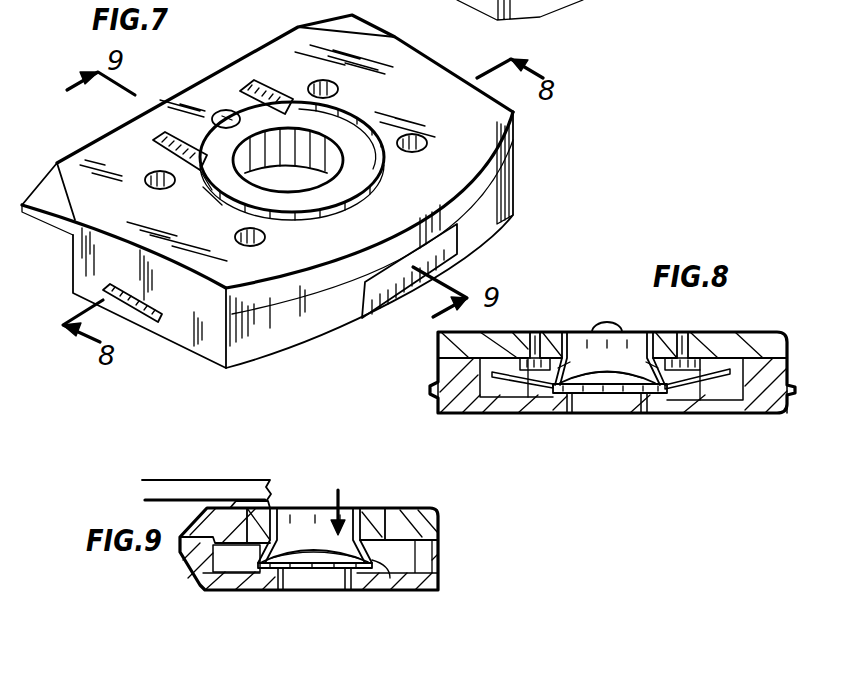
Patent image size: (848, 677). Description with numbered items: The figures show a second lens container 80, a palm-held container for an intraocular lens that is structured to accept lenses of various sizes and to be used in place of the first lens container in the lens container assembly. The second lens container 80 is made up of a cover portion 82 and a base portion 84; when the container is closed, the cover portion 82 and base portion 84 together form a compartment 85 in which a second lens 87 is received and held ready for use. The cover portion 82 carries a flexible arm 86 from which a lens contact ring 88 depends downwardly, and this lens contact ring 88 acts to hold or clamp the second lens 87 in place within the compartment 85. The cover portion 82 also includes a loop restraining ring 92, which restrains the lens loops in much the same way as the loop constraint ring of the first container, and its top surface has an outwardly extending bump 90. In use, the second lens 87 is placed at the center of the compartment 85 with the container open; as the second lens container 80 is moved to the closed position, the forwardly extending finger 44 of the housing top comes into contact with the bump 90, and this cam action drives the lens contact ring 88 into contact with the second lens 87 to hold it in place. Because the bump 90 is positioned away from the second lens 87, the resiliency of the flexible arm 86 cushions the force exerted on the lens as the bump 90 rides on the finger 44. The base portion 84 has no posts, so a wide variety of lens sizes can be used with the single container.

In FIG. 9, the finger 44 is at (178, 485).
In FIG. 7, the second lens container 80 is at (158, 354).
In FIG. 8, the second lens container 80 is at (768, 318).
In FIG. 9, the second lens container 80 is at (329, 601).
In FIG. 7, the cover portion 82 is at (88, 208).
In FIG. 8, the cover portion 82 is at (783, 333).
In FIG. 9, the cover portion 82 is at (435, 518).
In FIG. 7, the base portion 84 is at (200, 342).
In FIG. 8, the base portion 84 is at (737, 405).
In FIG. 9, the base portion 84 is at (433, 583).
In FIG. 8, the compartment 85 is at (543, 377).
In FIG. 7, the flexible arm 86 is at (358, 173).
In FIG. 8, the flexible arm 86 is at (667, 336).
In FIG. 9, the flexible arm 86 is at (367, 522).
In FIG. 8, the second lens 87 is at (637, 395).
In FIG. 8, the lens contact ring 88 is at (556, 378).
In FIG. 9, the lens contact ring 88 is at (390, 573).
In FIG. 7, the bump 90 is at (226, 109).
In FIG. 8, the bump 90 is at (608, 326).
In FIG. 9, the bump 90 is at (246, 502).
In FIG. 7, the loop restraining ring 92 is at (280, 273).
In FIG. 8, the loop restraining ring 92 is at (741, 368).